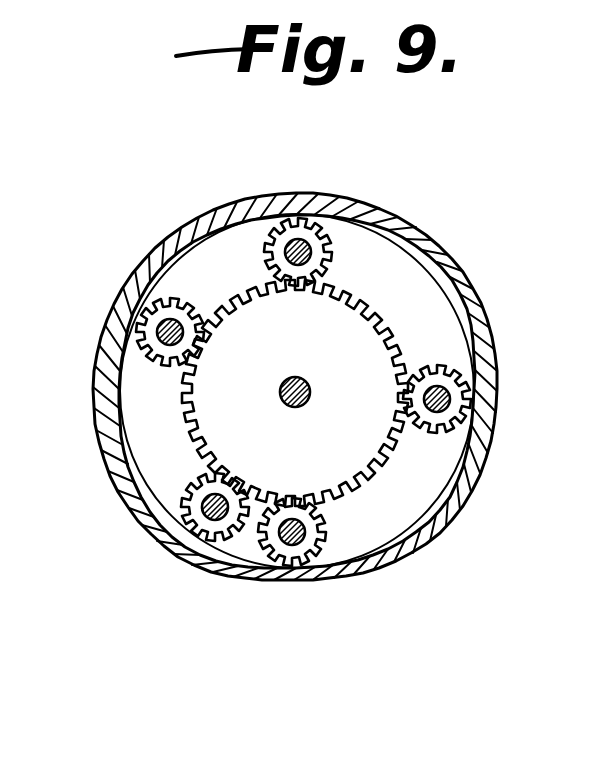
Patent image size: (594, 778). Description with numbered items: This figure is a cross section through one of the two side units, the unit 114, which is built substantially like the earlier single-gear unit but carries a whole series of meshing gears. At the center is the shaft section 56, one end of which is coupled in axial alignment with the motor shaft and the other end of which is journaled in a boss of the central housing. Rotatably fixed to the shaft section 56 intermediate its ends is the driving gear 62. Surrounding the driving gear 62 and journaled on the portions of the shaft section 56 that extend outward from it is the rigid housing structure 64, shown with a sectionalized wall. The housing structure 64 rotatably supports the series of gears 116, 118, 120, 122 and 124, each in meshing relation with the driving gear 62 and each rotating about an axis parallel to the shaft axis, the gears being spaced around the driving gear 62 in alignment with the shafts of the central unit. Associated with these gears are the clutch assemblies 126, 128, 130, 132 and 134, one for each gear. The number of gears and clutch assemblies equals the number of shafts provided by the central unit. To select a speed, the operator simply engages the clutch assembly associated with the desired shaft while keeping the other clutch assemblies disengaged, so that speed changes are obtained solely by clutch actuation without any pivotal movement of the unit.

The unit 114 is at (440, 250).
The housing structure 64 is at (200, 218).
The driving gear 62 is at (355, 335).
The shaft section 56 is at (310, 389).
The gear 118 is at (335, 218).
The clutch assembly 128 is at (312, 239).
The gear 116 is at (140, 303).
The clutch assembly 126 is at (156, 340).
The gear 120 is at (437, 370).
The clutch assembly 130 is at (456, 394).
The gear 124 is at (193, 493).
The clutch assembly 134 is at (195, 517).
The gear 122 is at (302, 563).
The clutch assembly 132 is at (306, 537).